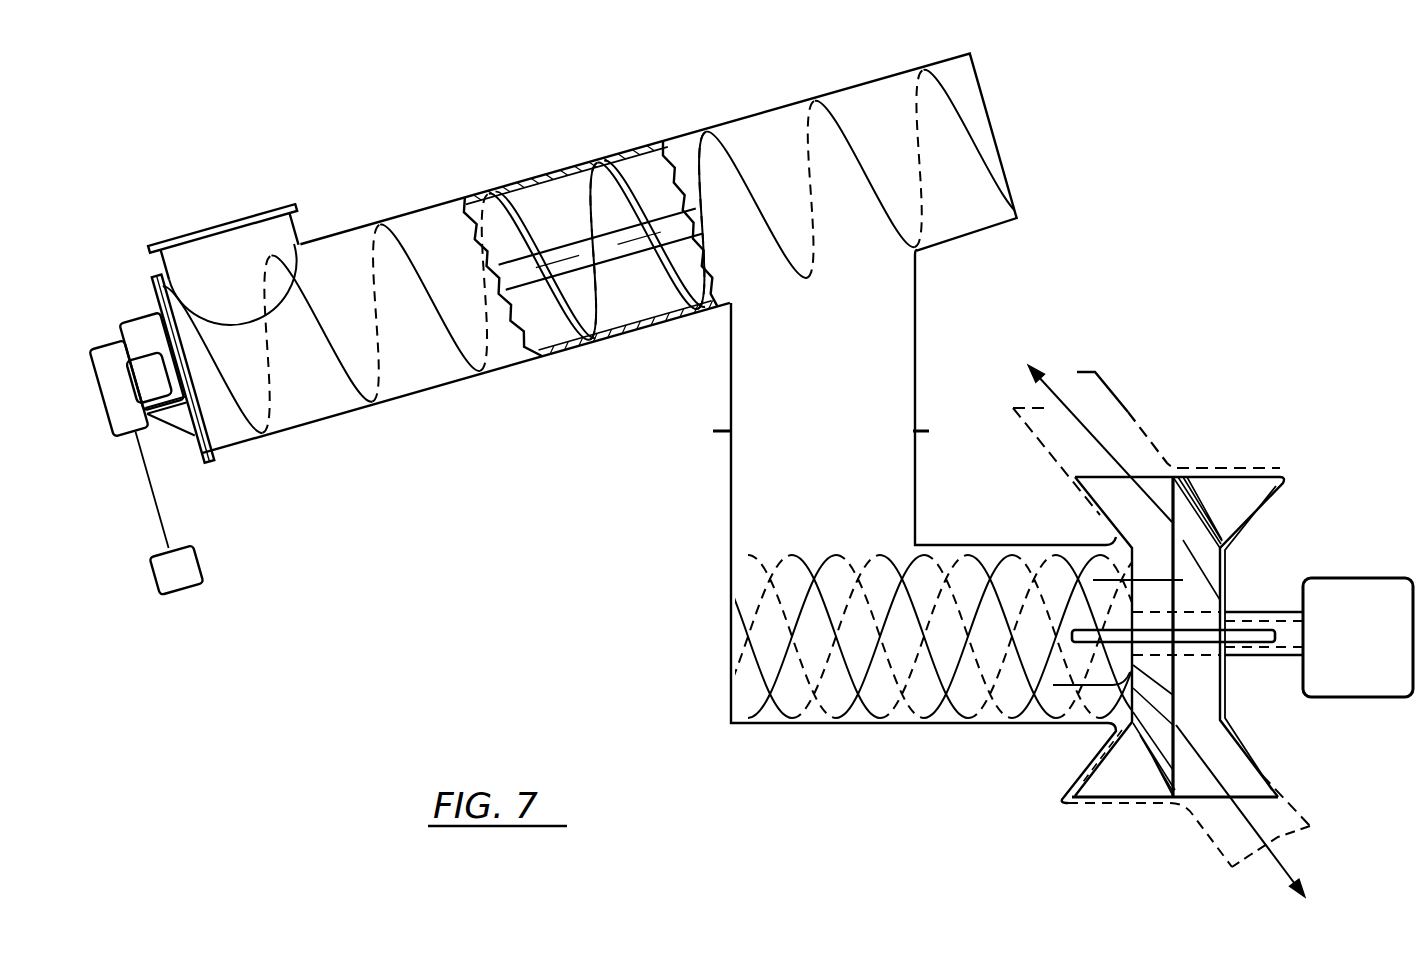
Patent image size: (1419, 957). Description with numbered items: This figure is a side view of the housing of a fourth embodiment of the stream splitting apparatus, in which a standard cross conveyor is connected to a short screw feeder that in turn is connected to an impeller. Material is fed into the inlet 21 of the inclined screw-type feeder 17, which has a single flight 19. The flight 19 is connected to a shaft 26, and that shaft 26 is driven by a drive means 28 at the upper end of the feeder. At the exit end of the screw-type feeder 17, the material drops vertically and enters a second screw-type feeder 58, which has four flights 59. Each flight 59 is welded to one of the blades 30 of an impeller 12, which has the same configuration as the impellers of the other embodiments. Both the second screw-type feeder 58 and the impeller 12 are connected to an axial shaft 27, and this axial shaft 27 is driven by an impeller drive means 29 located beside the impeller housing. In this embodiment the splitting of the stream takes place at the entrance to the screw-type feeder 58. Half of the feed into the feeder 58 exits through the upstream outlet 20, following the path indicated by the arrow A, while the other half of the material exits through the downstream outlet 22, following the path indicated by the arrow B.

The impeller 12 is at (1230, 507).
The screw-type feeder 17 is at (412, 214).
The single flight 19 is at (578, 318).
The upstream outlet 20 is at (1097, 468).
The inlet 21 is at (217, 230).
The downstream outlet 22 is at (1253, 807).
The shaft 26 is at (152, 318).
The axial shaft 27 is at (1255, 660).
The drive means 28 is at (203, 568).
The impeller drive means 29 is at (1390, 700).
The blades 30 is at (1113, 508).
The second screw-type feeder 58 is at (893, 727).
The flights 59 is at (1008, 693).
The path A is at (1055, 402).
The path B is at (1277, 858).